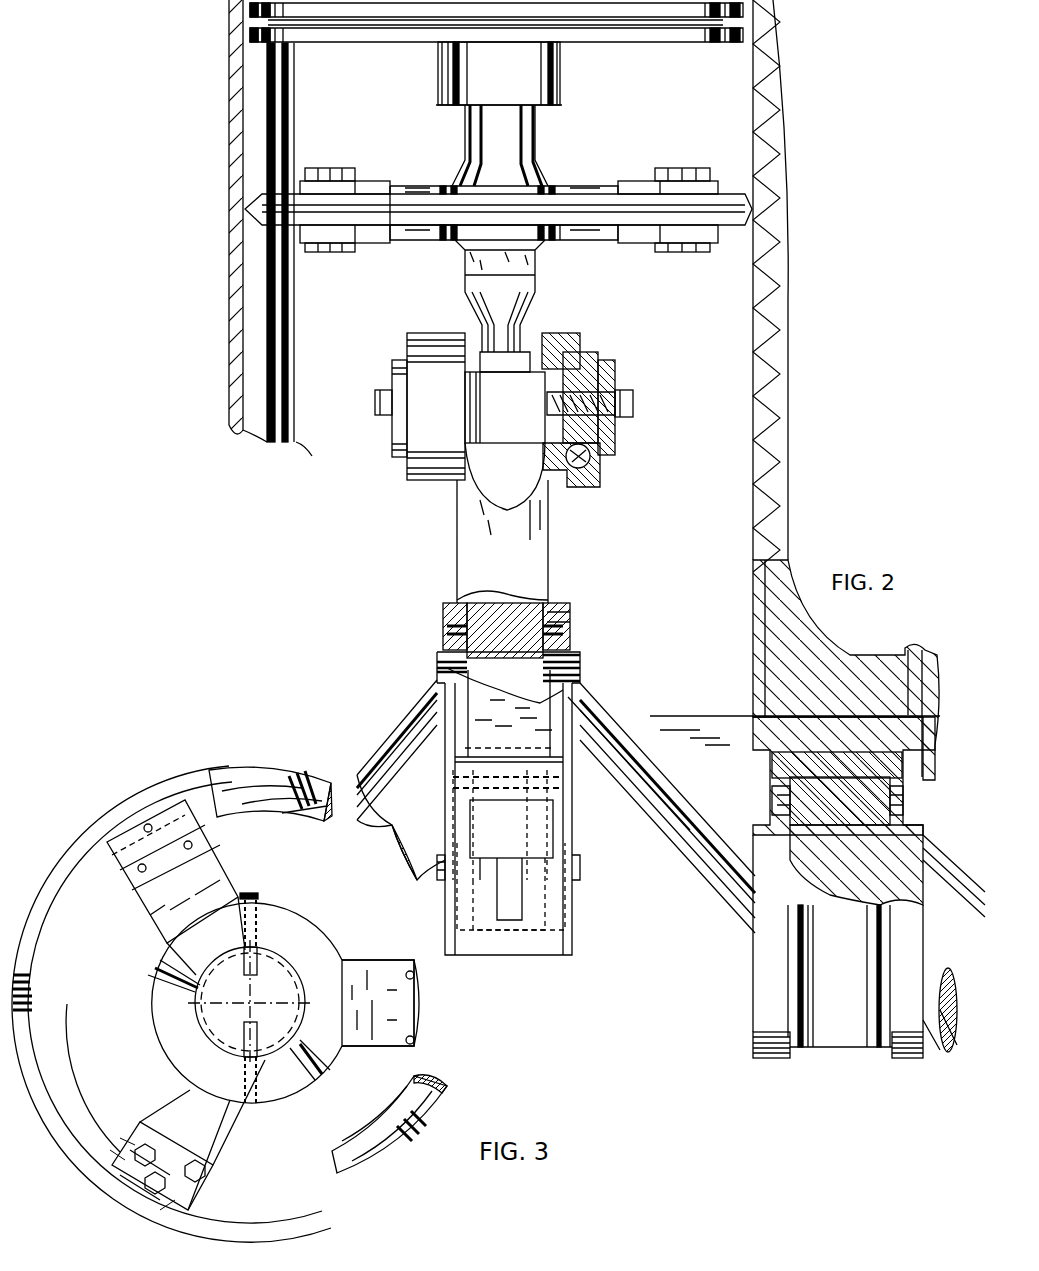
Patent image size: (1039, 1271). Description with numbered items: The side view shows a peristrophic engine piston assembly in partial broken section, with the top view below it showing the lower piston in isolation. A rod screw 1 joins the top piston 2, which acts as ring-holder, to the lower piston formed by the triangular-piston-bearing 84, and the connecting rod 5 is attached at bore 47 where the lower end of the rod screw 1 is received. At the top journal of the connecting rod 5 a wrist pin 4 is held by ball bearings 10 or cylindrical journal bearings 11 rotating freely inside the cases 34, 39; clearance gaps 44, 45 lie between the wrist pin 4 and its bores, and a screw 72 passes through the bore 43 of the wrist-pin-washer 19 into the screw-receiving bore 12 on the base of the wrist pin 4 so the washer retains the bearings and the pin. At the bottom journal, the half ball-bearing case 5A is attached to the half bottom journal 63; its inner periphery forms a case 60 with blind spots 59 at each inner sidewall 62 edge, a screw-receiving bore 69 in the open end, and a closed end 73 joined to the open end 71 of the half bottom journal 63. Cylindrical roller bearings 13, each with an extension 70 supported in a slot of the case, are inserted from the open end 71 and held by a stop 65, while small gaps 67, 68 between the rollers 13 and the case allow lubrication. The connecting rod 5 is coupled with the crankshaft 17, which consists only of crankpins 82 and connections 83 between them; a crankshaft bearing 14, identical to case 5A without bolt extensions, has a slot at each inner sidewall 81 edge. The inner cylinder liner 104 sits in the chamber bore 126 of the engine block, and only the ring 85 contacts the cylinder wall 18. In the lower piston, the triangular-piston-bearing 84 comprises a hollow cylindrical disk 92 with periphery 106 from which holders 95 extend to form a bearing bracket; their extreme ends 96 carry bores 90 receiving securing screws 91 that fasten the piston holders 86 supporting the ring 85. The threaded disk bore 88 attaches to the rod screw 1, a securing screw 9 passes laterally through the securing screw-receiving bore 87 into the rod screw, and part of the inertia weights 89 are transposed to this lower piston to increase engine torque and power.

In FIG. 2, the rod screw 1 is at (495, 153).
In FIG. 2, the top piston 2 is at (495, 95).
In FIG. 2, the wrist pin 4 is at (505, 407).
In FIG. 2, the connecting rod 5 is at (497, 566).
In FIG. 2, the half ball-bearing case 5A is at (491, 844).
In FIG. 3, the securing screw 9 is at (248, 892).
In FIG. 2, the ball bearings 10 is at (580, 470).
In FIG. 2, the journal bearings 11 is at (600, 370).
In FIG. 2, the screw-receiving bore 12 is at (633, 412).
In FIG. 2, the cylindrical roller bearings 13 is at (678, 714).
In FIG. 2, the crankshaft bearing 14 is at (837, 765).
In FIG. 2, the crankshaft 17 is at (856, 865).
In FIG. 2, the cylinder wall 18 is at (732, 115).
In FIG. 2, the wrist-pin-washer 19 is at (620, 383).
In FIG. 2, the case 34 is at (580, 355).
In FIG. 2, the case 39 is at (600, 460).
In FIG. 2, the bore 43 is at (615, 415).
In FIG. 2, the clearance gap 44 is at (545, 455).
In FIG. 2, the clearance gap 45 is at (540, 360).
In FIG. 2, the bore 47 is at (475, 365).
In FIG. 2, the blind spots 59 is at (560, 625).
In FIG. 2, the case 60 is at (565, 650).
In FIG. 2, the inner sidewall 62 is at (480, 880).
In FIG. 2, the half bottom journal 63 is at (445, 615).
In FIG. 2, the stop 65 is at (490, 750).
In FIG. 2, the small gap 67 is at (460, 610).
In FIG. 2, the small gap 68 is at (555, 600).
In FIG. 2, the screw-receiving bore 69 is at (455, 780).
In FIG. 2, the extension 70 is at (450, 633).
In FIG. 2, the open end 71 is at (445, 870).
In FIG. 2, the screw 72 is at (375, 398).
In FIG. 2, the closed end 73 is at (575, 780).
In FIG. 2, the inner sidewall 81 is at (772, 793).
In FIG. 2, the crankpins 82 is at (580, 672).
In FIG. 2, the connections 83 is at (650, 760).
In FIG. 2, the triangular-piston-bearing 84 is at (550, 237).
In FIG. 3, the triangular-piston-bearing 84 is at (175, 1098).
In FIG. 2, the ring 85 is at (270, 215).
In FIG. 3, the ring 85 is at (230, 811).
In FIG. 2, the piston holders 86 is at (370, 182).
In FIG. 3, the piston holders 86 is at (149, 1173).
In FIG. 3, the securing screw-receiving bore 87 is at (257, 930).
In FIG. 3, the hollow cylindrical disk bore 88 is at (250, 1002).
In FIG. 3, the inertia weights 89 is at (180, 1000).
In FIG. 3, the bore 90 is at (148, 826).
In FIG. 2, the securing screws 91 is at (330, 168).
In FIG. 3, the securing screws 91 is at (195, 1167).
In FIG. 3, the hollow cylindrical disk 92 is at (165, 1045).
In FIG. 2, the holders 95 is at (415, 232).
In FIG. 3, the holders 95 is at (372, 965).
In FIG. 3, the extreme ends 96 is at (412, 1005).
In FIG. 2, the inner cylinder liner 104 is at (762, 497).
In FIG. 3, the periphery 106 is at (305, 1060).
In FIG. 2, the chamber bore 126 is at (795, 697).